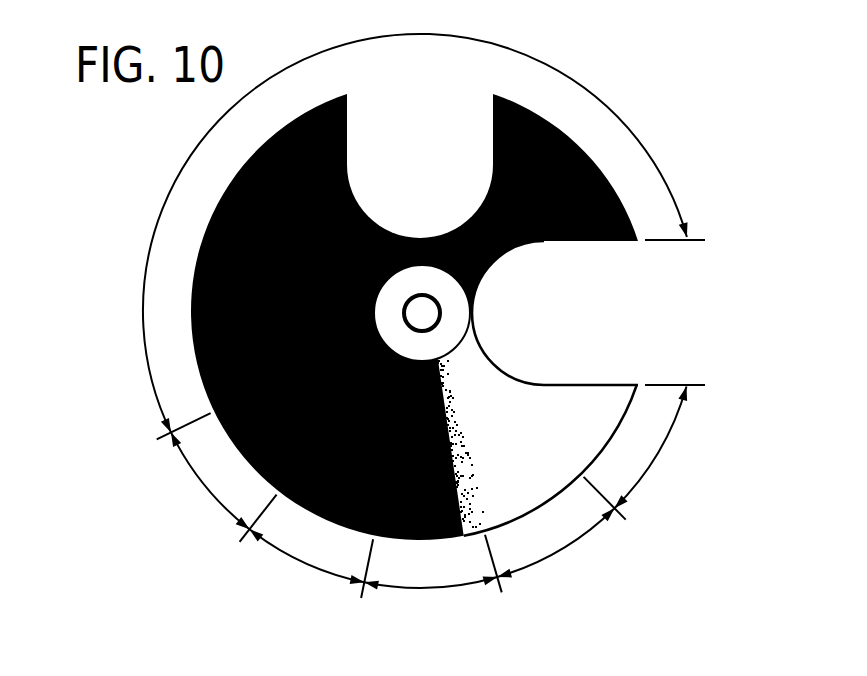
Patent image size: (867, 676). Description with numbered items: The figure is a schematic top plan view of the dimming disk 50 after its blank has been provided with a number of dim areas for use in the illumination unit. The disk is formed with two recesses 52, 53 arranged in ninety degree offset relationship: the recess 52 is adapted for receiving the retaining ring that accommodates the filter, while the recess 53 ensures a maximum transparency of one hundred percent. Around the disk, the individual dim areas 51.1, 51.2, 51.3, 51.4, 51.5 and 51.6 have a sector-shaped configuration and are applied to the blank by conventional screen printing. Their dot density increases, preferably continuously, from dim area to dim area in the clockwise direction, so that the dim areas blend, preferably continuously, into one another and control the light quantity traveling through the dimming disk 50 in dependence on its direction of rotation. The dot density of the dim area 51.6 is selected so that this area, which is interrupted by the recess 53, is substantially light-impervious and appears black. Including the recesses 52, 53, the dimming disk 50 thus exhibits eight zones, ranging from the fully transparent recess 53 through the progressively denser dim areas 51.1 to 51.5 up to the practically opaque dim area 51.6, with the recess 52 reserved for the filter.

The dimming disk 50 is at (425, 288).
The recess 52 is at (588, 321).
The recess 53 is at (438, 164).
The dim area 51.1 is at (656, 457).
The dim area 51.2 is at (541, 560).
The dim area 51.3 is at (430, 588).
The dim area 51.4 is at (293, 557).
The dim area 51.5 is at (201, 481).
The dim area 51.6 is at (654, 162).